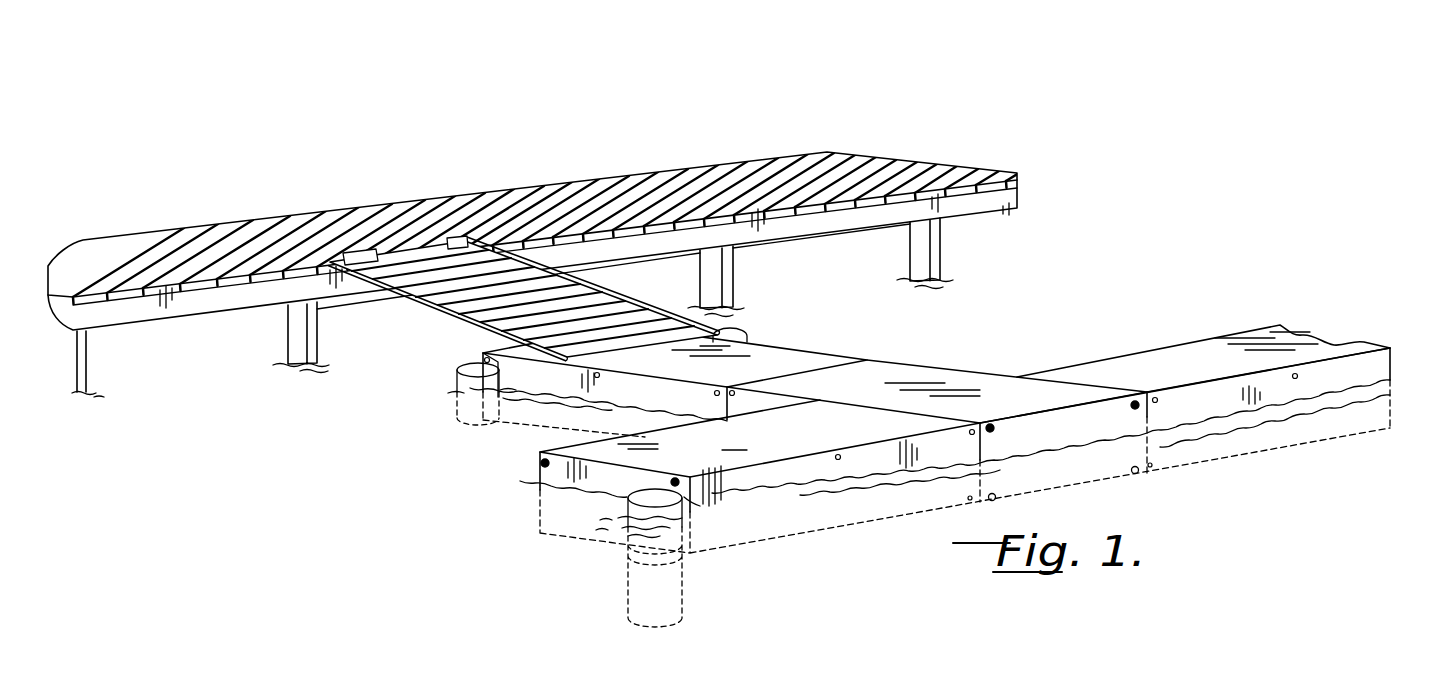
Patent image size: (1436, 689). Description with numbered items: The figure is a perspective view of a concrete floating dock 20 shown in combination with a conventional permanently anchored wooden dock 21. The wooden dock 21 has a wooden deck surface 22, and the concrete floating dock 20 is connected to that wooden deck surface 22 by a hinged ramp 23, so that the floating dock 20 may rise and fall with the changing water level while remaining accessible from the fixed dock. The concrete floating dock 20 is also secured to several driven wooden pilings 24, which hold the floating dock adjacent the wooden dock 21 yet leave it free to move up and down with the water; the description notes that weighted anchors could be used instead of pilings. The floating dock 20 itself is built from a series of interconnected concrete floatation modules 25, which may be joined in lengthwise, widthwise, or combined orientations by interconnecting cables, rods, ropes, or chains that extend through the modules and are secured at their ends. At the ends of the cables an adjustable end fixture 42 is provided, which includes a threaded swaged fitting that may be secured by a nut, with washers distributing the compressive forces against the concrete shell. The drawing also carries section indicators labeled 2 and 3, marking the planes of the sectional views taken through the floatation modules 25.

The concrete floating dock 20 is at (936, 417).
The wooden dock 21 is at (855, 142).
The wooden deck surface 22 is at (575, 182).
The hinged ramp 23 is at (430, 305).
The driven wooden pilings 24 is at (88, 377).
The concrete floatation modules 25 is at (843, 352).
The adjustable end fixture 42 is at (541, 464).
The section line 2- 2 is at (830, 462).
The section line 3- 3 is at (852, 353).